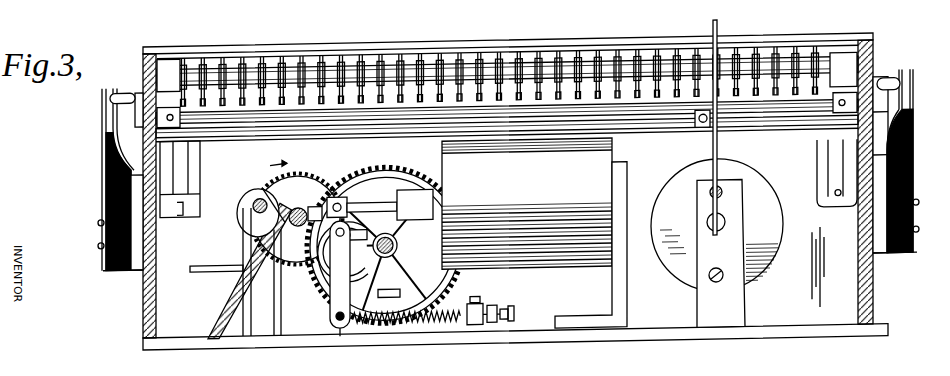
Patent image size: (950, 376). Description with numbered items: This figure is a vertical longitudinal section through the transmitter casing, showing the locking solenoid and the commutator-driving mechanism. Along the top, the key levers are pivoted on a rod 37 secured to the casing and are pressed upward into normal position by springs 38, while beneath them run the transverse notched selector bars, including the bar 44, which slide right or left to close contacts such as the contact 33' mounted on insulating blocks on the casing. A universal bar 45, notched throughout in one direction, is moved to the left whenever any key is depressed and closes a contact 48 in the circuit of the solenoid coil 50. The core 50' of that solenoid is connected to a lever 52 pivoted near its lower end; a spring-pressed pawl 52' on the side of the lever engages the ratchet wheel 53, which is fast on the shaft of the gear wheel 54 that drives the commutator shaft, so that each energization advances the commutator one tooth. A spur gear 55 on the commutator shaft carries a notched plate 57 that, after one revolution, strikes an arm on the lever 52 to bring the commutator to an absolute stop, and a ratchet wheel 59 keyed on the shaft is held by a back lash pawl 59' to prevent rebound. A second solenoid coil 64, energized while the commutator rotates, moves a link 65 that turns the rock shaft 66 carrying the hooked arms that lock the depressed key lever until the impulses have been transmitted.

The springs 38 is at (362, 73).
The rod 37 is at (716, 66).
The notched bar 44 is at (136, 97).
The universal bar 45 is at (877, 94).
The contact 48 is at (901, 86).
The contact 33' is at (103, 180).
The solenoid coil 50 is at (512, 234).
The core 50' is at (366, 195).
The lever 52 is at (316, 279).
The spring-pressed pawl 52' is at (387, 304).
The ratchet wheel 53 is at (405, 256).
The gear wheel 54 is at (407, 178).
The spur gear 55 is at (262, 191).
The plate 57 is at (313, 213).
The ratchet wheel 59 is at (302, 185).
The back lash pawl 59' is at (236, 272).
The solenoid coil 64 is at (752, 204).
The link 65 is at (712, 162).
The rock shaft 66 is at (758, 131).